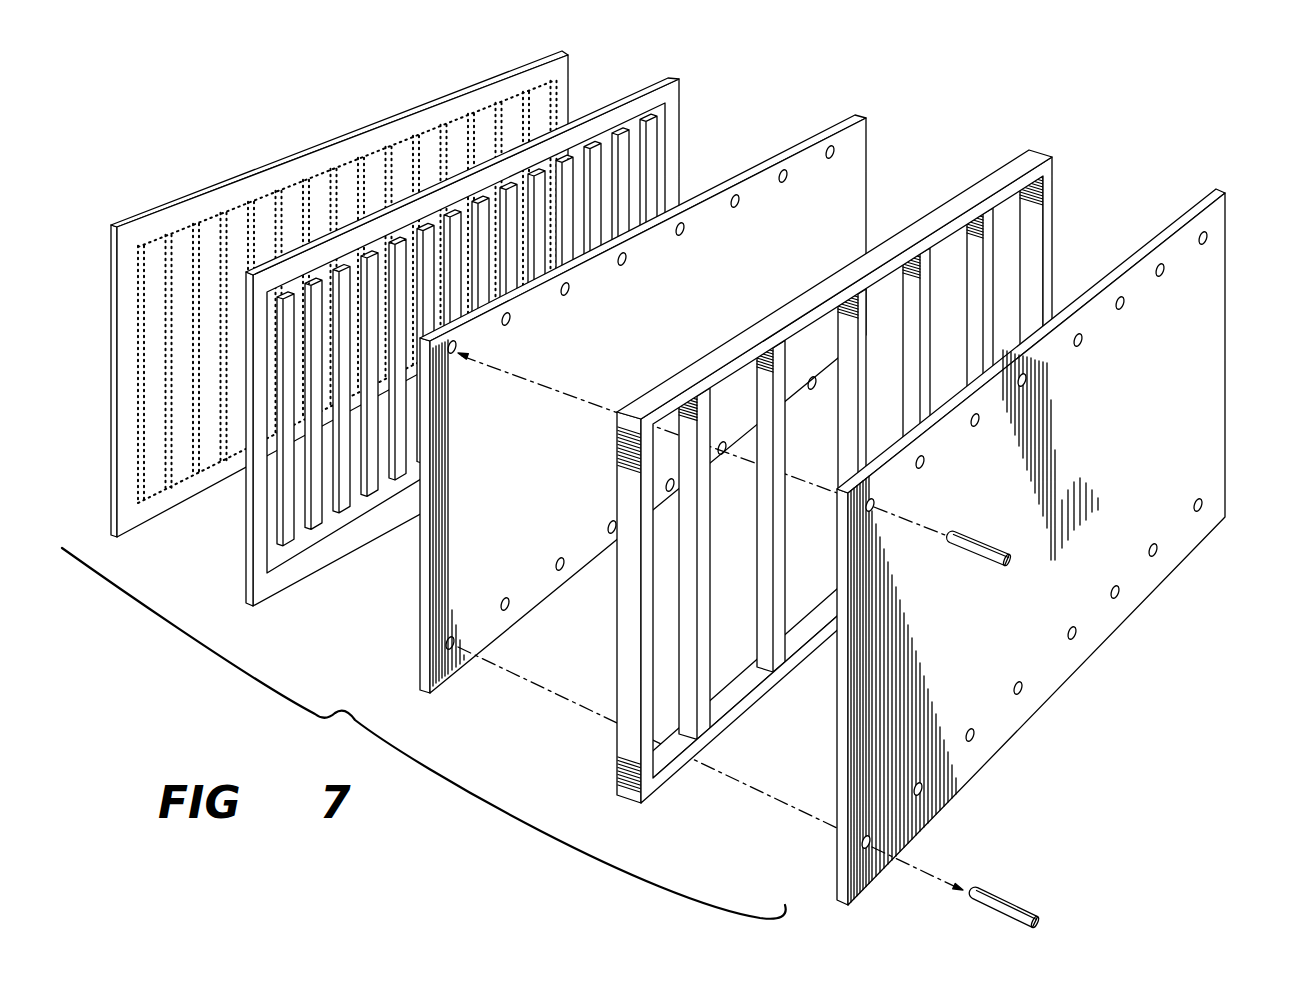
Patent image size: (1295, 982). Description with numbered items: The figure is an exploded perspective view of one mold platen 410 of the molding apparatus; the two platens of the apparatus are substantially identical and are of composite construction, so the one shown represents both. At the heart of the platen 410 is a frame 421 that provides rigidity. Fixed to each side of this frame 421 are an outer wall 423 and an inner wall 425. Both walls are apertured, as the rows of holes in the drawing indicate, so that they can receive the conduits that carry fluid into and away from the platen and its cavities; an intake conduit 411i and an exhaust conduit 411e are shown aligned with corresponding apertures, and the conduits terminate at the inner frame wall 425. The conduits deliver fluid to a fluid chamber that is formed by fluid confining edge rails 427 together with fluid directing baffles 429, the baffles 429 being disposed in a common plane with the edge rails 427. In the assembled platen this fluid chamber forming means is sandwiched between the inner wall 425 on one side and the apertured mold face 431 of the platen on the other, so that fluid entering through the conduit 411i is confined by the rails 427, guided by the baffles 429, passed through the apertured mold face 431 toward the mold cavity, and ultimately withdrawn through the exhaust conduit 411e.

The mold platen 410 is at (695, 481).
The intake conduit 411i is at (968, 535).
The exhaust conduit 411e is at (998, 891).
The frame 421 is at (1049, 218).
The outer wall 423 is at (1212, 351).
The inner wall 425 is at (845, 198).
The fluid confining edge rails 427 is at (675, 92).
The fluid directing baffles 429 is at (623, 157).
The apertured mold face 431 is at (262, 171).